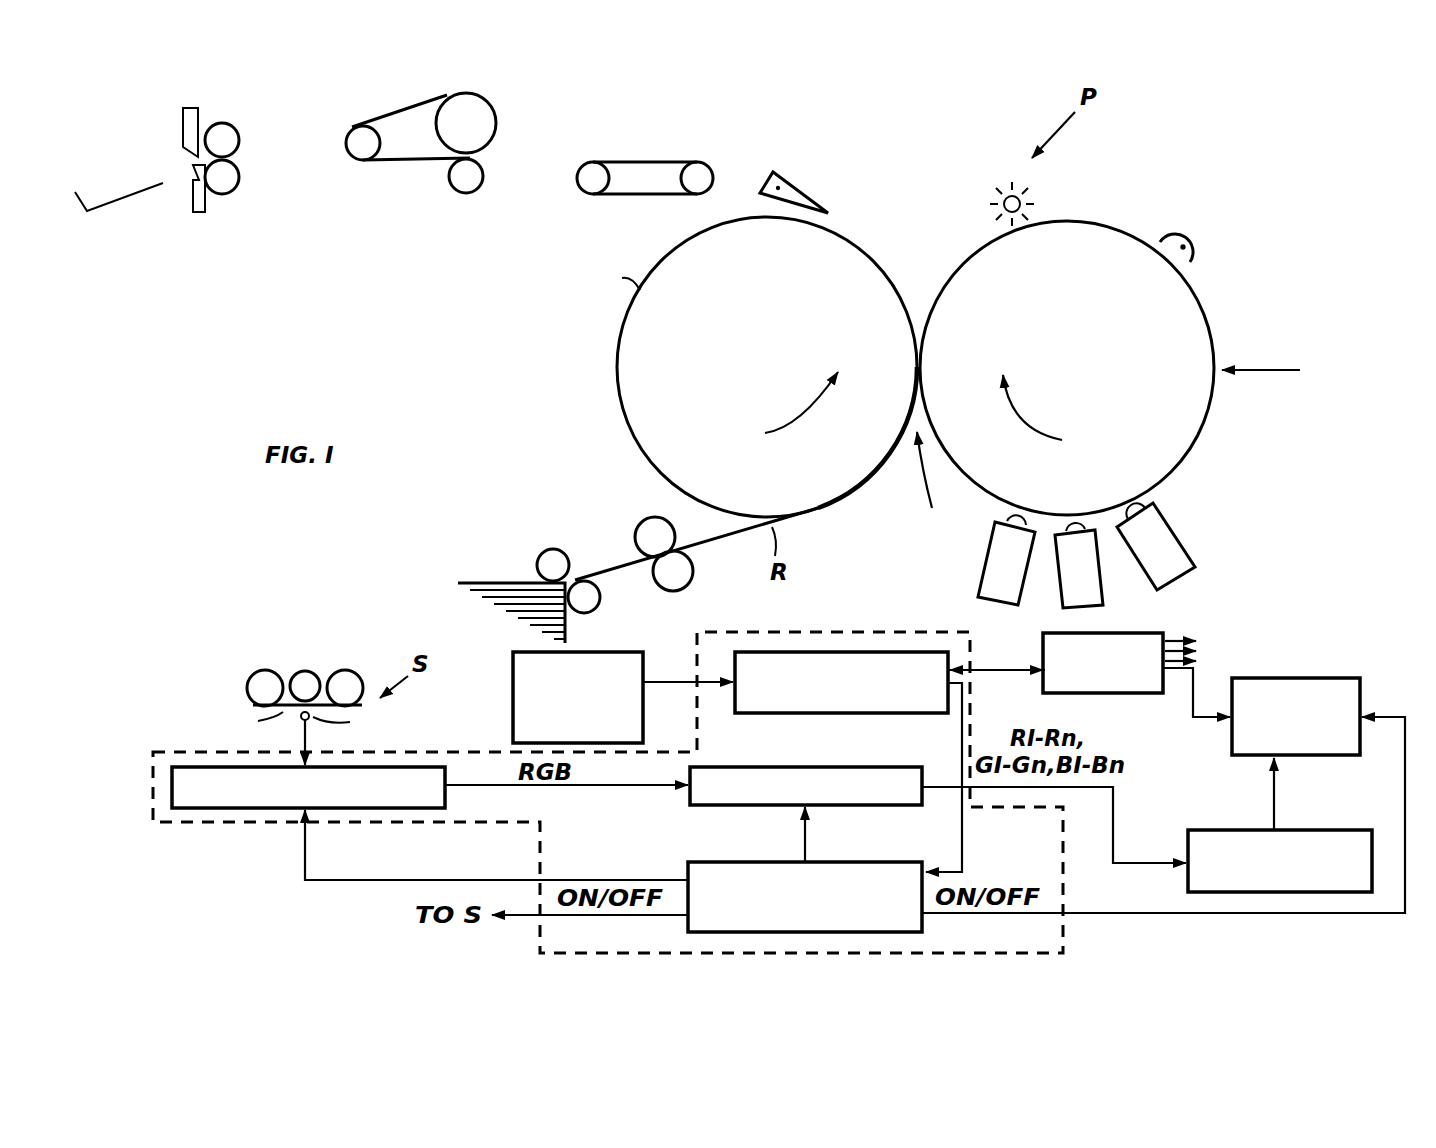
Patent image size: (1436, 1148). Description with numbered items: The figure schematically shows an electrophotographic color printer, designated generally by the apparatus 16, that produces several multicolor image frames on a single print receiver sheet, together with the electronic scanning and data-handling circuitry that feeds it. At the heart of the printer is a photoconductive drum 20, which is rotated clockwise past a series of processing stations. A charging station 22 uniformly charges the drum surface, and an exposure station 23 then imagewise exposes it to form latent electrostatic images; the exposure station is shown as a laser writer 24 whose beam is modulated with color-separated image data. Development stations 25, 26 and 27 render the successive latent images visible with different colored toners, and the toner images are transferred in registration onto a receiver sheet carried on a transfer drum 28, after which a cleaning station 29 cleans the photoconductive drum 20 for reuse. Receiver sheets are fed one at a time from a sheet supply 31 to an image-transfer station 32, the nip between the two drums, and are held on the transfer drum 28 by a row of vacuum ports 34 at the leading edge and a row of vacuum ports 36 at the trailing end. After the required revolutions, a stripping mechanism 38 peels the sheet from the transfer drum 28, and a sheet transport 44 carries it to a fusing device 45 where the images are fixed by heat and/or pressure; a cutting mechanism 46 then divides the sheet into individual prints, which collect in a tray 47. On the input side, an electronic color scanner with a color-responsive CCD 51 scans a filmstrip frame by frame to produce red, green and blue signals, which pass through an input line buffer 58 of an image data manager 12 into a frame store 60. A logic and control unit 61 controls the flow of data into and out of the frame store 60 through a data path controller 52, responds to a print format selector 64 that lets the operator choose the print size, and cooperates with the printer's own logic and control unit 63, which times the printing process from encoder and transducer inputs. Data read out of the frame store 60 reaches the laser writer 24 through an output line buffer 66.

The image data manager 12 is at (822, 630).
The printer apparatus 16 is at (1355, 450).
The photoconductive drum 20 is at (1100, 230).
The charging station 22 is at (1200, 240).
The exposure station 23 is at (1258, 370).
The laser writer 24 is at (1361, 693).
The development station 25 is at (1172, 565).
The development station 26 is at (1092, 577).
The development station 27 is at (1013, 576).
The transfer drum 28 is at (872, 252).
The cleaning station 29 is at (1003, 192).
The sheet supply 31 is at (478, 583).
The image-transfer station 32 is at (937, 491).
The vacuum ports 34 is at (862, 473).
The vacuum ports 36 is at (611, 275).
The stripping mechanism 38 is at (793, 190).
The sheet transport 44 is at (657, 162).
The fusing device 45 is at (529, 110).
The cutting mechanism 46 is at (240, 122).
The tray 47 is at (104, 183).
The color-responsive CCD 51 is at (312, 717).
The data path controller 52 is at (862, 862).
The input line buffer 58 is at (217, 810).
The frame store 60 is at (703, 807).
The logic and control unit 61 is at (815, 715).
The logic and control unit 63 is at (1125, 694).
The print format selector 64 is at (513, 698).
The output line buffer 66 is at (1318, 830).